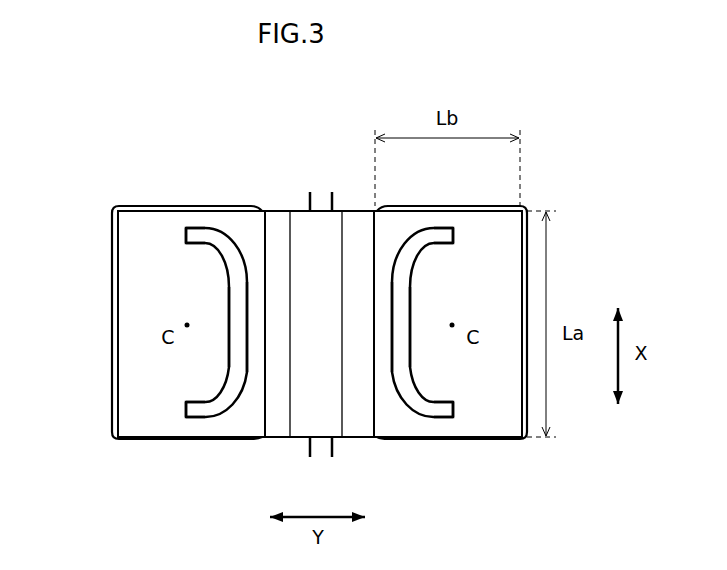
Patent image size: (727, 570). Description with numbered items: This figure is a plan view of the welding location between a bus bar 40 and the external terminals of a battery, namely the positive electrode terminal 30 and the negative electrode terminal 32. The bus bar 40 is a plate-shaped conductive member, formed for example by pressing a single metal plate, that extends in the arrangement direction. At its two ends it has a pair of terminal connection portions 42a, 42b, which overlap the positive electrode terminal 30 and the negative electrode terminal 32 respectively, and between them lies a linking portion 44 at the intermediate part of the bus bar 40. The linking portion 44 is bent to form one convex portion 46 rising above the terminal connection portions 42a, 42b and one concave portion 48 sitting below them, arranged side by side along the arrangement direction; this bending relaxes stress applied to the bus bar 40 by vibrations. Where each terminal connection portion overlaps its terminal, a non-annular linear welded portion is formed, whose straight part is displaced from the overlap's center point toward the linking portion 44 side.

The positive electrode terminal 30 is at (140, 442).
The negative electrode terminal 32 is at (498, 443).
The bus bar 40 is at (114, 262).
The terminal connection portion 42a is at (130, 403).
The terminal connection portion 42b is at (503, 433).
The linking portion 44 is at (318, 208).
The convex portion 46 is at (300, 210).
The concave portion 48 is at (338, 210).